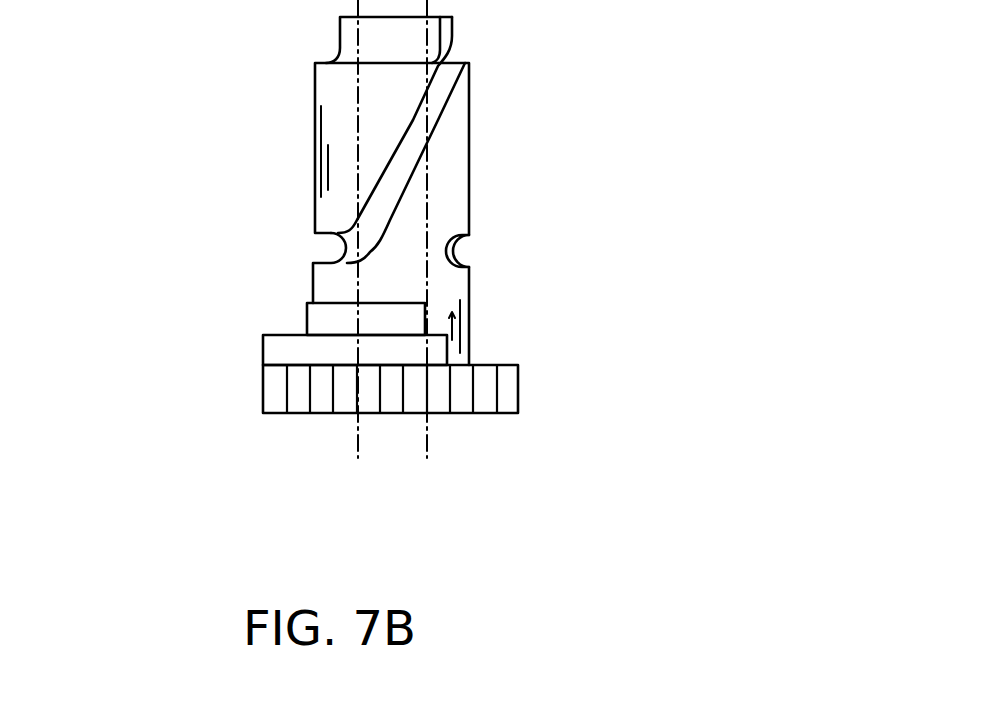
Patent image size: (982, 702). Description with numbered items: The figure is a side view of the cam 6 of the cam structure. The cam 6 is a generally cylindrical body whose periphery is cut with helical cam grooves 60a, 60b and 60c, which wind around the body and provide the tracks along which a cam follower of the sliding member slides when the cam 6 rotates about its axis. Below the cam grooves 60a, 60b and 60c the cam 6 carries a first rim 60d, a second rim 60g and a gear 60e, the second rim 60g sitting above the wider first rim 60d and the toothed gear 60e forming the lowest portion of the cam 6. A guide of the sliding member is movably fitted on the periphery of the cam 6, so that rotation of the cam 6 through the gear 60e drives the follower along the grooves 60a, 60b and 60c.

The cam 6 is at (712, 200).
The helical cam groove 60a is at (340, 36).
The helical cam groove 60b is at (443, 103).
The helical cam groove 60c is at (462, 248).
The first rim 60d is at (273, 352).
The gear 60e is at (518, 387).
The second rim 60g is at (307, 320).